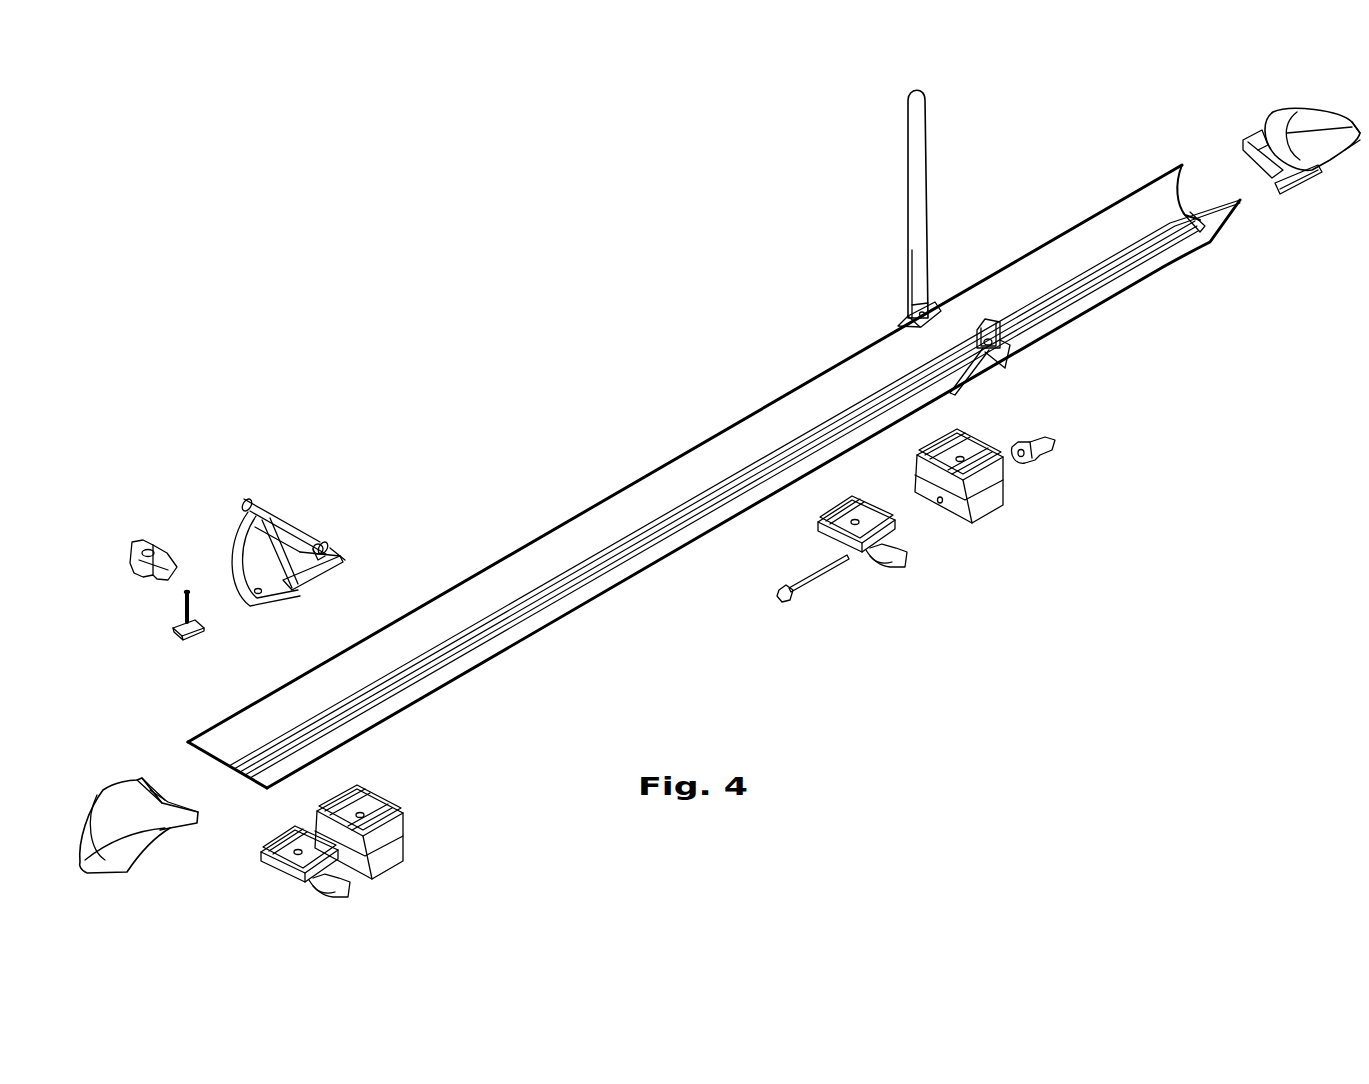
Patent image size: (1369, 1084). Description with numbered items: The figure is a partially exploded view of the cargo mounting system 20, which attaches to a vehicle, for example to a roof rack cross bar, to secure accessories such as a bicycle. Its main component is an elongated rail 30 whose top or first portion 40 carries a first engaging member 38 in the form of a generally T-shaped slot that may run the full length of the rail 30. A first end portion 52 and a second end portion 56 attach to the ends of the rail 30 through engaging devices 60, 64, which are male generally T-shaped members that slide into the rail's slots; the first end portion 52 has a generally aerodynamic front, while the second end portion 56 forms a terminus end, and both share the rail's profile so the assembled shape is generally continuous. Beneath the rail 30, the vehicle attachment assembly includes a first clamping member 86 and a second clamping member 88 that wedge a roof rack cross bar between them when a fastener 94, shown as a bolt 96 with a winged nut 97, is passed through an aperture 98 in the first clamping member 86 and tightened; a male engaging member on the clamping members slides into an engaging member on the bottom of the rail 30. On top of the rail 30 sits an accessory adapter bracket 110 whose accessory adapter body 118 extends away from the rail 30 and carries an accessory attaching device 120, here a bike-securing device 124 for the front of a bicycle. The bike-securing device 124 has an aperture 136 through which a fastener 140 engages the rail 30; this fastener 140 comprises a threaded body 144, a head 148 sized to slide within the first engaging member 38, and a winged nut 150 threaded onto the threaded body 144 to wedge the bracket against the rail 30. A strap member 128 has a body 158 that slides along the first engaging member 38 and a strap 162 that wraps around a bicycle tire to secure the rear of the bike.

The cargo mounting system 20 is at (712, 302).
The rail 30 is at (685, 452).
The first engaging member 38 is at (593, 555).
The first portion 40 is at (508, 557).
The first end portion 52 is at (100, 822).
The second end portion 56 is at (1305, 130).
The engaging device 60 is at (162, 800).
The engaging device 64 is at (1296, 194).
The first clamping member 86 is at (993, 492).
The second clamping member 88 is at (893, 553).
The fastener 94 is at (820, 590).
The bolt 96 is at (817, 577).
The winged nut 97 is at (1052, 447).
The aperture 98 is at (940, 503).
The accessory adapter bracket 110 is at (275, 495).
The accessory adapter body 118 is at (307, 578).
The accessory attaching device 120 is at (287, 514).
The bike-securing device 124 is at (343, 562).
The strap member 128 is at (918, 312).
The aperture 136 is at (258, 593).
The fastener 140 is at (184, 555).
The threaded body 144 is at (183, 598).
The head 148 is at (200, 630).
The winged nut 150 is at (152, 540).
The body 158 is at (985, 372).
The strap 162 is at (920, 195).